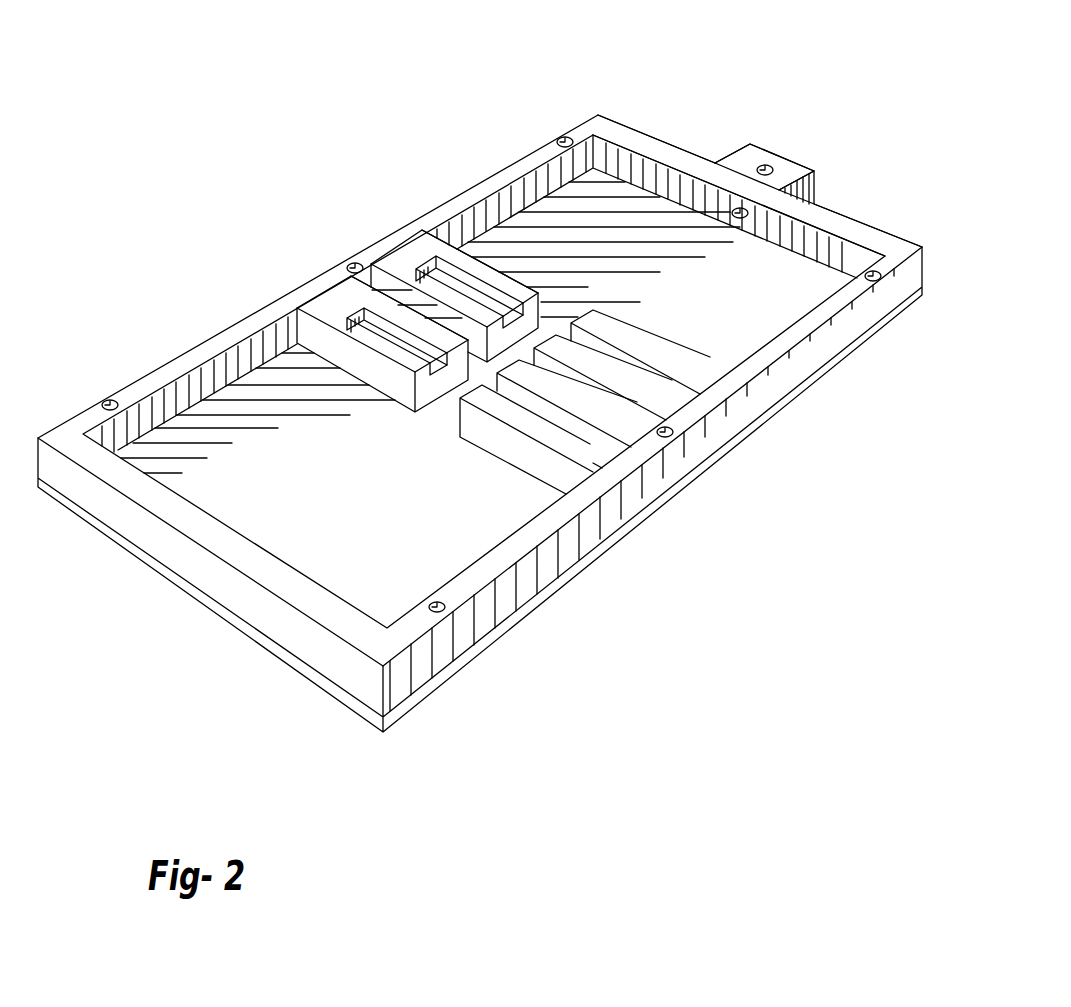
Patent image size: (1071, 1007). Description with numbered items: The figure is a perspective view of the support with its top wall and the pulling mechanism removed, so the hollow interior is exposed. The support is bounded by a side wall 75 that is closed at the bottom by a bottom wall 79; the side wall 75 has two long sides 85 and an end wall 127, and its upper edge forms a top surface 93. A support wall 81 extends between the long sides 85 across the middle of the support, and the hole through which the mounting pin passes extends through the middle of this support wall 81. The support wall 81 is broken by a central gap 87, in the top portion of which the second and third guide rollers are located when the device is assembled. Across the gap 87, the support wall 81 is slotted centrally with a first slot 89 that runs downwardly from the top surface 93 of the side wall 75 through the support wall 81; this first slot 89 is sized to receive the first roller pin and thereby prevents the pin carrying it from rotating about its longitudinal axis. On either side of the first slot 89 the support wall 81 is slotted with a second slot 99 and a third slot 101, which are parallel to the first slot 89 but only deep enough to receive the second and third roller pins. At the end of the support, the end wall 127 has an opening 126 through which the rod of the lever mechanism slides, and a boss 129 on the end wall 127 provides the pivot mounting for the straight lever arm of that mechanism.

The side wall 75 is at (636, 130).
The bottom wall 79 is at (776, 409).
The support wall 81 is at (477, 258).
The long sides 85 is at (418, 250).
The central gap 87 is at (562, 318).
The first slot 89 is at (405, 292).
The top surface 93 is at (203, 350).
The second slot 99 is at (437, 280).
The third slot 101 is at (367, 312).
The opening 126 is at (737, 209).
The end wall 127 is at (827, 208).
The boss 129 is at (768, 150).